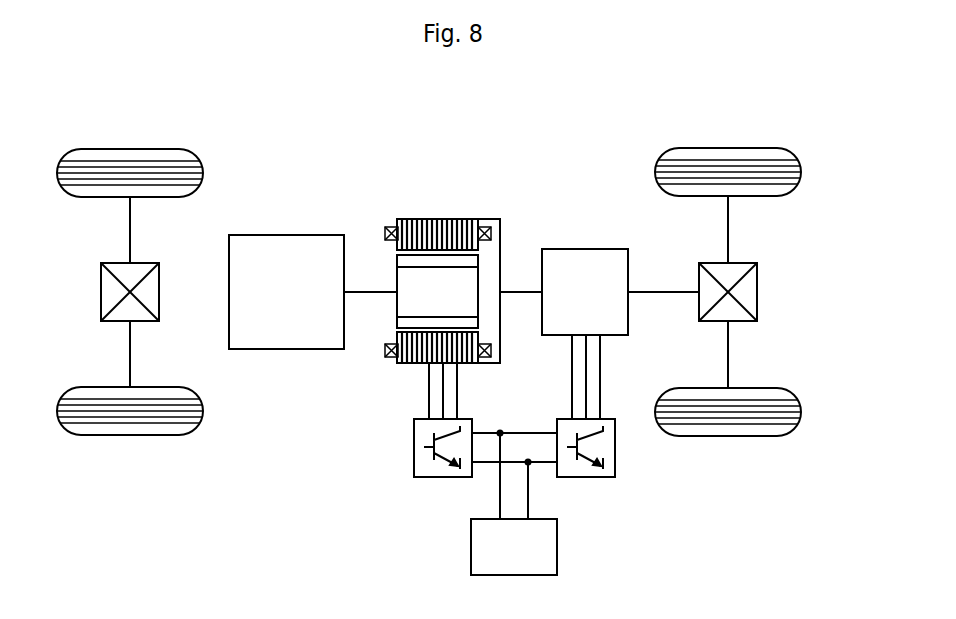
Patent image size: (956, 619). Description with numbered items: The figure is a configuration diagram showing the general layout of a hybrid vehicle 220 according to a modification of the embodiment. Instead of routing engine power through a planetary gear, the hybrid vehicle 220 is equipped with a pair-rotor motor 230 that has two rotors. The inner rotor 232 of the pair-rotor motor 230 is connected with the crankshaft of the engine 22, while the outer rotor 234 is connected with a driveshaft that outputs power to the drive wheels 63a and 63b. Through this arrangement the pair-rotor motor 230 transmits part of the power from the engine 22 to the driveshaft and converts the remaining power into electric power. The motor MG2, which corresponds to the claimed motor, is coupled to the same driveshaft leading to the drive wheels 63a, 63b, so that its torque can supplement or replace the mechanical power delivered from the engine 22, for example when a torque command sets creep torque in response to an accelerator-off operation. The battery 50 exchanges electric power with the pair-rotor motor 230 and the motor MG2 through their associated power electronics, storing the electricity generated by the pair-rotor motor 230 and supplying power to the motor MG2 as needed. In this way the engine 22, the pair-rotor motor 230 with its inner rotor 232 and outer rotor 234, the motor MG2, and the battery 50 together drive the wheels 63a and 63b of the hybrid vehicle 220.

The hybrid vehicle 220 is at (546, 107).
The engine 22 is at (286, 235).
The pair-rotor motor 230 is at (472, 160).
The inner rotor 232 is at (397, 276).
The outer rotor 234 is at (446, 219).
The motor MG2 is at (586, 249).
The drive wheel 63a is at (727, 148).
The drive wheel 63b is at (727, 437).
The battery 50 is at (557, 548).